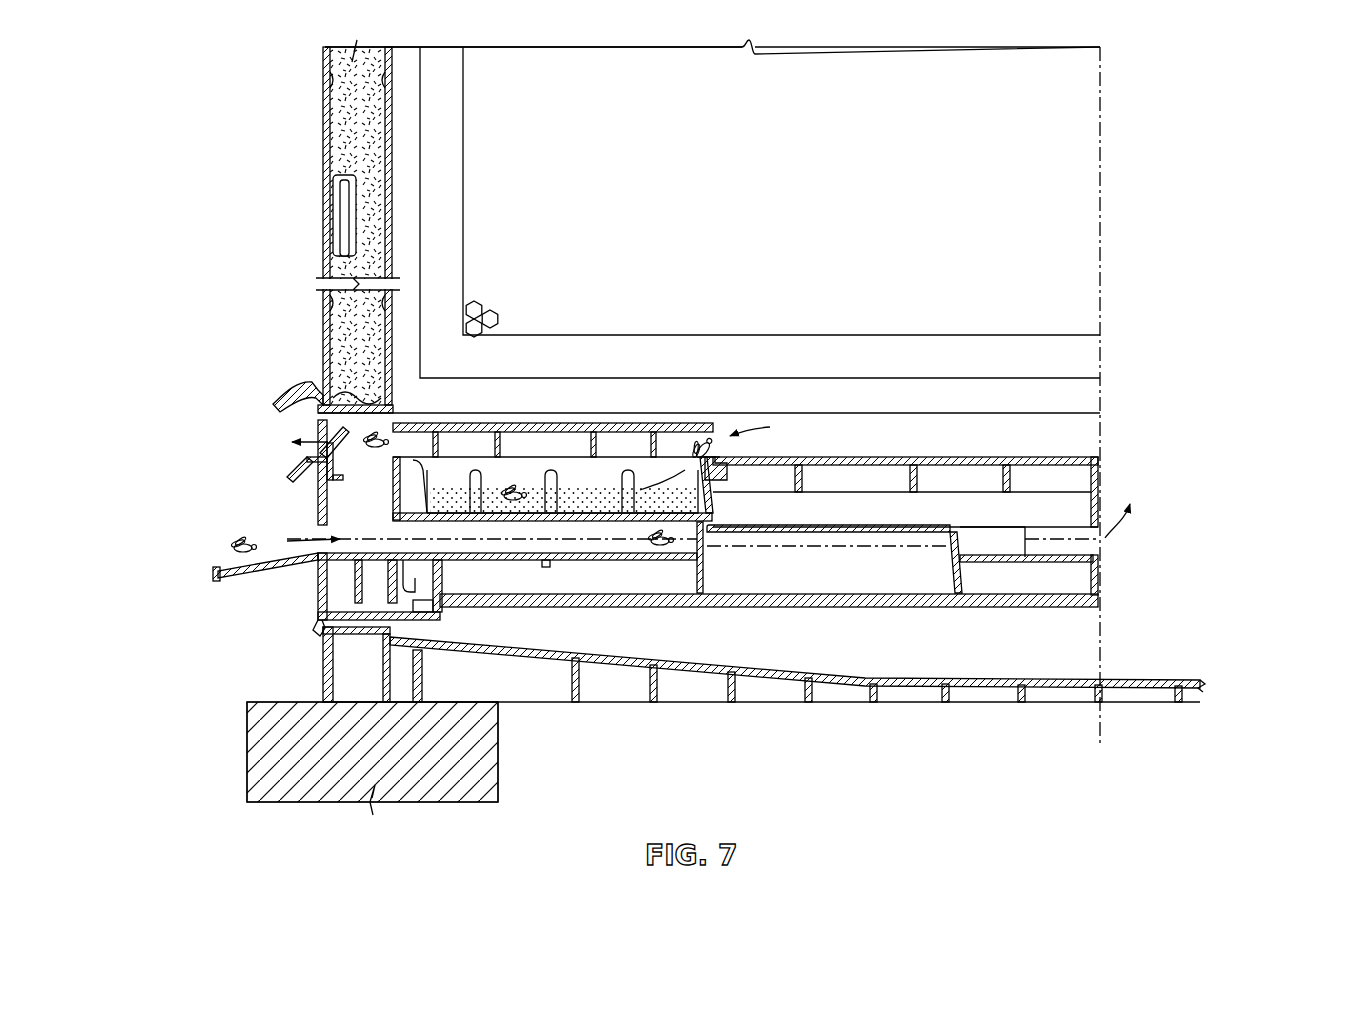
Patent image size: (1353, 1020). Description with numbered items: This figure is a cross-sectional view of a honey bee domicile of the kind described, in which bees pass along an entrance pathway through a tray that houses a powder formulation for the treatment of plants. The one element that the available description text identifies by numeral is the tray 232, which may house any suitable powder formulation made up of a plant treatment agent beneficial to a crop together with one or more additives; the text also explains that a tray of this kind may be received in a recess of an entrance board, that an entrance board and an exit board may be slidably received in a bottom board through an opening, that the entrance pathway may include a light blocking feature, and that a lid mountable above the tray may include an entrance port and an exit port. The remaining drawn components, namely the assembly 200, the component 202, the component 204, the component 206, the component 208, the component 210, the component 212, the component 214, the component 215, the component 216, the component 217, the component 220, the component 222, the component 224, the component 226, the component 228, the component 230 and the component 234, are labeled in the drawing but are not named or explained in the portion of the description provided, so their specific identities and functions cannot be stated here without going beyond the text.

The hive body wall with insulation 200 is at (285, 222).
The hive frame/comb panel 202 is at (447, 166).
The foundation block 204 is at (327, 750).
The support base 206 is at (235, 712).
The hive stand 208 is at (1213, 638).
The bottom board 210 is at (761, 664).
The entrance housing 212 is at (297, 508).
The lower floor member 214 is at (1067, 593).
The entrance floor plate 215 is at (466, 540).
The upper housing section 216 is at (1048, 470).
The tray medium 217 is at (590, 483).
The passage plate 220 is at (1014, 456).
The housing cover layer 222 is at (902, 458).
The cavity 224 is at (720, 507).
The upper layer rib 226 is at (452, 437).
The retaining tab 228 is at (706, 428).
The hook flange 230 is at (327, 422).
The tray 232 is at (407, 480).
The tray top plate 234 is at (498, 432).